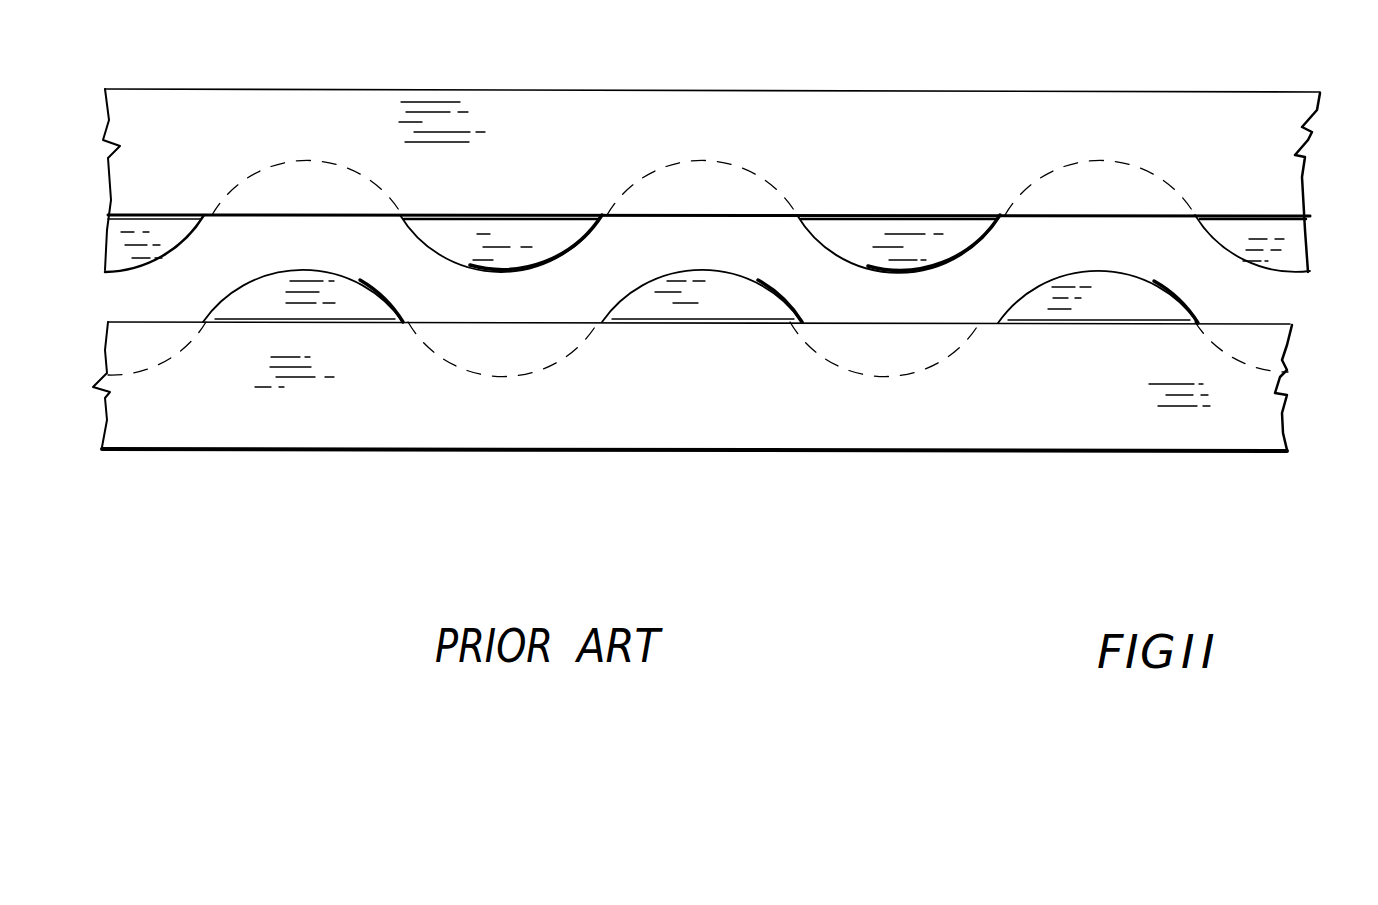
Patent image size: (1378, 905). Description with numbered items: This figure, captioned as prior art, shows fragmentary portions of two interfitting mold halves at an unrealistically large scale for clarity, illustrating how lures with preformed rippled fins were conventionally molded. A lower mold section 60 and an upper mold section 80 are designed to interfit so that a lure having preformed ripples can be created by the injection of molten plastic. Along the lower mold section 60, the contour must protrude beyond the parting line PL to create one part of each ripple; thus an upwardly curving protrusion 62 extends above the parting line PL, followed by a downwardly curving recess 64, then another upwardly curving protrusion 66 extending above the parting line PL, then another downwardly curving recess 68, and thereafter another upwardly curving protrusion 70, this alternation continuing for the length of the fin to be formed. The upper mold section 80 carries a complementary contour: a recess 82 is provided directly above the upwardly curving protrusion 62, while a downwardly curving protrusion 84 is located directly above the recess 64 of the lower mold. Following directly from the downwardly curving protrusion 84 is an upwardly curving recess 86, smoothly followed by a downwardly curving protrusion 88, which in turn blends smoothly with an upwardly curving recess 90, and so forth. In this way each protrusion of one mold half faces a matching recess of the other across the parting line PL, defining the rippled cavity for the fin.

The lower mold section 60 is at (1263, 412).
The upwardly curving protrusion 62 is at (345, 275).
The downwardly curving recess 64 is at (512, 377).
The upwardly curving protrusion 66 is at (732, 275).
The downwardly curving recess 68 is at (890, 378).
The upwardly curving protrusion 70 is at (1130, 278).
The upper mold section 80 is at (1308, 135).
The recess 82 is at (347, 167).
The downwardly curving protrusion 84 is at (543, 263).
The upwardly curving recess 86 is at (750, 172).
The downwardly curving protrusion 88 is at (942, 270).
The upwardly curving recess 90 is at (1150, 176).
The parting line PL is at (1268, 216).